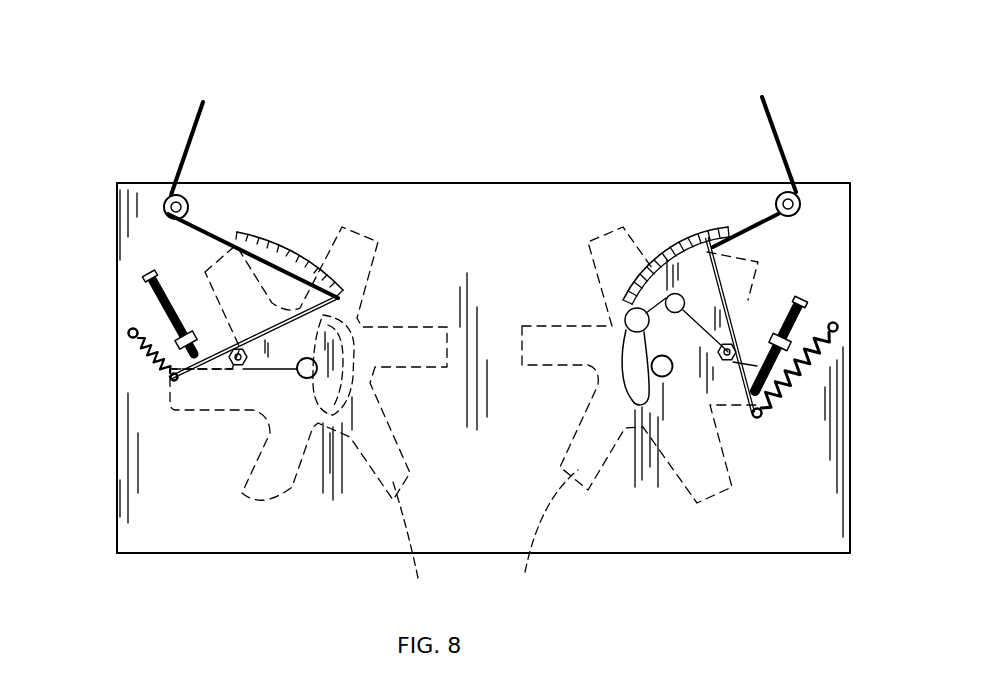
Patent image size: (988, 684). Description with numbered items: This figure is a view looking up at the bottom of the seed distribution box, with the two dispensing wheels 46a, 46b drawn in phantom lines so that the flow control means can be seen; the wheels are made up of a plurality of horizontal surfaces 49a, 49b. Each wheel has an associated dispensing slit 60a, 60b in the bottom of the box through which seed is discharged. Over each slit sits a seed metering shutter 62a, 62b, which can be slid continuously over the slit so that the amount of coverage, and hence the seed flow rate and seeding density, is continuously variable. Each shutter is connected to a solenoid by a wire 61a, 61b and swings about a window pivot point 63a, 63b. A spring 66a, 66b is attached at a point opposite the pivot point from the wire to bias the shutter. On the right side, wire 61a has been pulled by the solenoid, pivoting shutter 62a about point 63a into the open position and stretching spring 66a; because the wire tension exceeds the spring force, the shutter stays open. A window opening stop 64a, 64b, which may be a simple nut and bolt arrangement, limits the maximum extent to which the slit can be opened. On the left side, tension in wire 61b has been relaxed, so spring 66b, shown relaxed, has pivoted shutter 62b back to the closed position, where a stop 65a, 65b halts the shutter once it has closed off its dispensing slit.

The dispensing wheel 46a is at (550, 327).
The dispensing wheel 46b is at (362, 230).
The horizontal surface 49a is at (542, 537).
The horizontal surface 49b is at (424, 541).
The dispensing slit 60a is at (651, 413).
The dispensing slit 60b is at (322, 411).
The wire 61a is at (778, 137).
The wire 61b is at (183, 137).
The shutter 62a is at (620, 298).
The shutter 62b is at (261, 372).
The window pivot point 63a is at (728, 362).
The window pivot point 63b is at (236, 365).
The window opening stop 64a is at (784, 307).
The window opening stop 64b is at (155, 310).
The stop 65a is at (665, 376).
The stop 65b is at (304, 378).
The spring 66a is at (812, 378).
The spring 66b is at (140, 358).